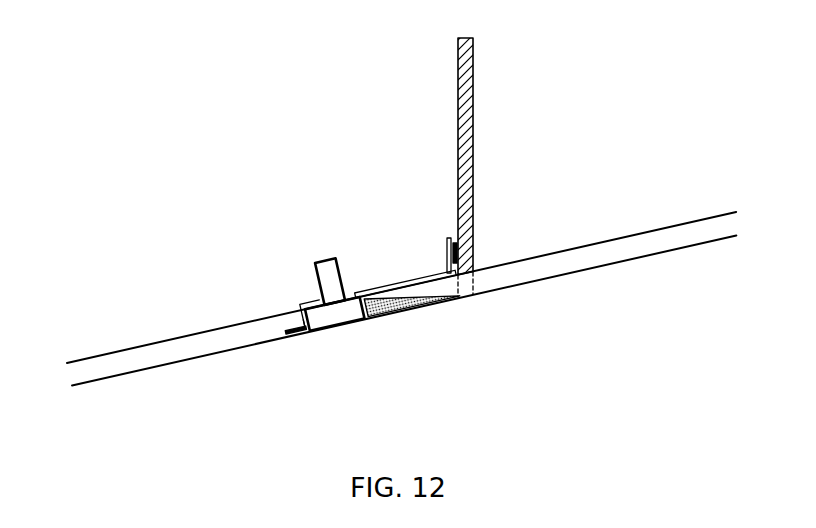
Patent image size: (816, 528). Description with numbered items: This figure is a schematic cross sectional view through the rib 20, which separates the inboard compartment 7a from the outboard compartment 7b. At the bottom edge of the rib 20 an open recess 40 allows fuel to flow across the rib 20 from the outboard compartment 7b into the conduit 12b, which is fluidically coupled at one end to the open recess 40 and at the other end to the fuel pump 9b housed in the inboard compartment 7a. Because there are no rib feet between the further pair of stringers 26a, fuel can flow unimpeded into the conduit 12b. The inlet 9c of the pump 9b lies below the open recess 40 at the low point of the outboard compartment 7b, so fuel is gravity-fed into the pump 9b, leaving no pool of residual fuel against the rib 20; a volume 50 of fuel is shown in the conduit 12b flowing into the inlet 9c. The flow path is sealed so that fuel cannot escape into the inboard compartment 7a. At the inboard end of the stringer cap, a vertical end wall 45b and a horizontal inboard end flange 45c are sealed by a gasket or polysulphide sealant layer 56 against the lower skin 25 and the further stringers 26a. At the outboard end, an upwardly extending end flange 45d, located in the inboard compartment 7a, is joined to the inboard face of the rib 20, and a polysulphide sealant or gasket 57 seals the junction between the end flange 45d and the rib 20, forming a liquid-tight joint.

The inboard compartment 7a is at (294, 164).
The outboard compartment 7b is at (643, 134).
The fuel pump 9b is at (289, 256).
The inlet 9c is at (360, 302).
The conduit 12b is at (435, 273).
The rib 20 is at (470, 78).
The lower skin 25 is at (602, 265).
The further stringers 26a is at (598, 242).
The open recess 40 is at (474, 288).
The vertical end wall 45b is at (297, 313).
The horizontal inboard end flange 45c is at (298, 325).
The upwardly extending end flange 45d is at (452, 253).
The volume of fuel 50 is at (408, 310).
The gasket or polysulphide sealant layer 56 is at (300, 334).
The polysulphide sealant or gasket 57 is at (445, 250).